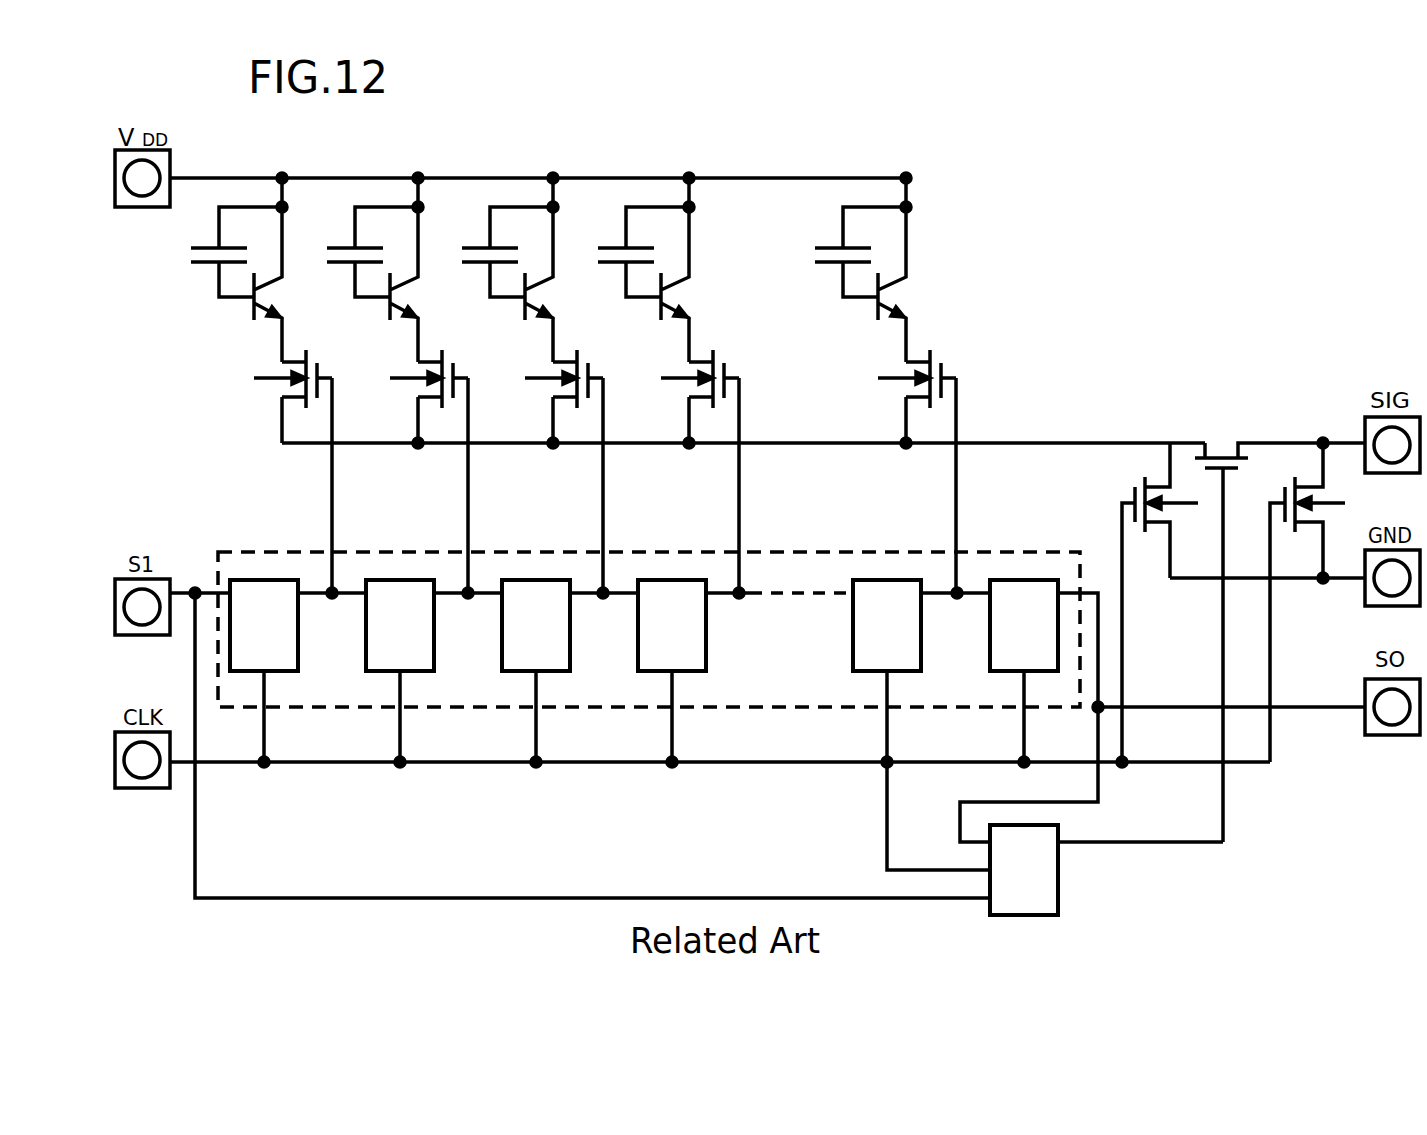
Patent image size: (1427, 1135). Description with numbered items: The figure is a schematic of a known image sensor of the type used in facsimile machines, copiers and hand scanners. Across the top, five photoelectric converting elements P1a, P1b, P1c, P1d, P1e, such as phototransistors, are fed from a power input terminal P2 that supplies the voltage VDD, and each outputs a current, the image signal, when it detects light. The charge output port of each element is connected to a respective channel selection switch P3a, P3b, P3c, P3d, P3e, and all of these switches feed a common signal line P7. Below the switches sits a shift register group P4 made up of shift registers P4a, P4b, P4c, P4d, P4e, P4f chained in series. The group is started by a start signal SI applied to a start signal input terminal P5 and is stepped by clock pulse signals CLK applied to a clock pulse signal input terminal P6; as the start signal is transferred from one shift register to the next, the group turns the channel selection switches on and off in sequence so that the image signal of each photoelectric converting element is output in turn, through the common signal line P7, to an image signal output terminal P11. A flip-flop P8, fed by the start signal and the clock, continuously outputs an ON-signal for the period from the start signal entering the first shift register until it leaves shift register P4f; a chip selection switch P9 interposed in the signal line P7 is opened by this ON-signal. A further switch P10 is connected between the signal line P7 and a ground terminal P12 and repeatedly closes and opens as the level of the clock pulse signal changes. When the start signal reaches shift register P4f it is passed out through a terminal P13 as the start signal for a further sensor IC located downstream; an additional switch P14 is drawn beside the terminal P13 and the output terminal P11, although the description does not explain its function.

The photoelectric converting element P1a is at (284, 298).
The photoelectric converting element P1b is at (420, 298).
The photoelectric converting element P1c is at (555, 298).
The photoelectric converting element P1d is at (691, 298).
The photoelectric converting element P1e is at (908, 297).
The power input terminal P2 is at (142, 207).
The channel selection switch P3a is at (273, 368).
The channel selection switch P3b is at (409, 368).
The channel selection switch P3c is at (544, 368).
The channel selection switch P3d is at (680, 368).
The channel selection switch P3e is at (897, 388).
The shift register group P4 is at (625, 710).
The shift register P4a is at (264, 673).
The shift register P4b is at (400, 673).
The shift register P4c is at (536, 673).
The shift register P4d is at (672, 673).
The shift register P4e is at (921, 725).
The shift register P4f is at (1024, 673).
The start signal input terminal P5 is at (120, 635).
The clock pulse signal input terminal P6 is at (120, 788).
The common signal line P7 is at (1072, 443).
The flip-flop P8 is at (1058, 870).
The chip selection switch P9 is at (1218, 432).
The switch P10 is at (1178, 493).
The image signal output terminal P11 is at (1370, 473).
The ground terminal P12 is at (1370, 606).
The terminal P13 is at (1370, 735).
The switching transistor P14 is at (1327, 493).